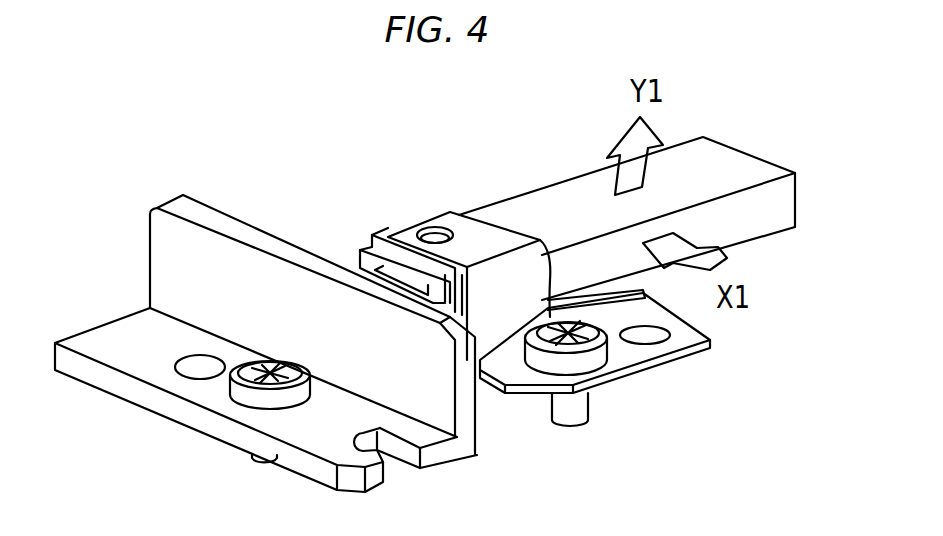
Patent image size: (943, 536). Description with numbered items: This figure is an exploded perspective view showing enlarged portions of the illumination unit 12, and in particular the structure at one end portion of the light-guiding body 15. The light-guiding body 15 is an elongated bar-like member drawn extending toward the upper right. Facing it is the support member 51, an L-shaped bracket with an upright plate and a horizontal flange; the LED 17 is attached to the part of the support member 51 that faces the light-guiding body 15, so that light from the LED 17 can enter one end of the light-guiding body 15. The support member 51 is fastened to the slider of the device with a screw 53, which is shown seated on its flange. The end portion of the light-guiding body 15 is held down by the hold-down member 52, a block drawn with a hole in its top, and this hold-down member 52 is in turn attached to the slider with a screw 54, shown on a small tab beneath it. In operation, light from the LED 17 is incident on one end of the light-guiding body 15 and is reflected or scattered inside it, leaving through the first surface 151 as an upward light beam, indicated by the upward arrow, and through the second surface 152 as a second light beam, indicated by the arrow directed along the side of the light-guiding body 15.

The illumination unit 12 is at (368, 160).
The light-guiding body 15 is at (641, 200).
The first surface 151 is at (584, 195).
The second surface 152 is at (752, 228).
The LED 17 is at (395, 282).
The support member 51 is at (208, 228).
The hold-down member 52 is at (472, 232).
The screw 53 is at (247, 387).
The screw 54 is at (553, 362).